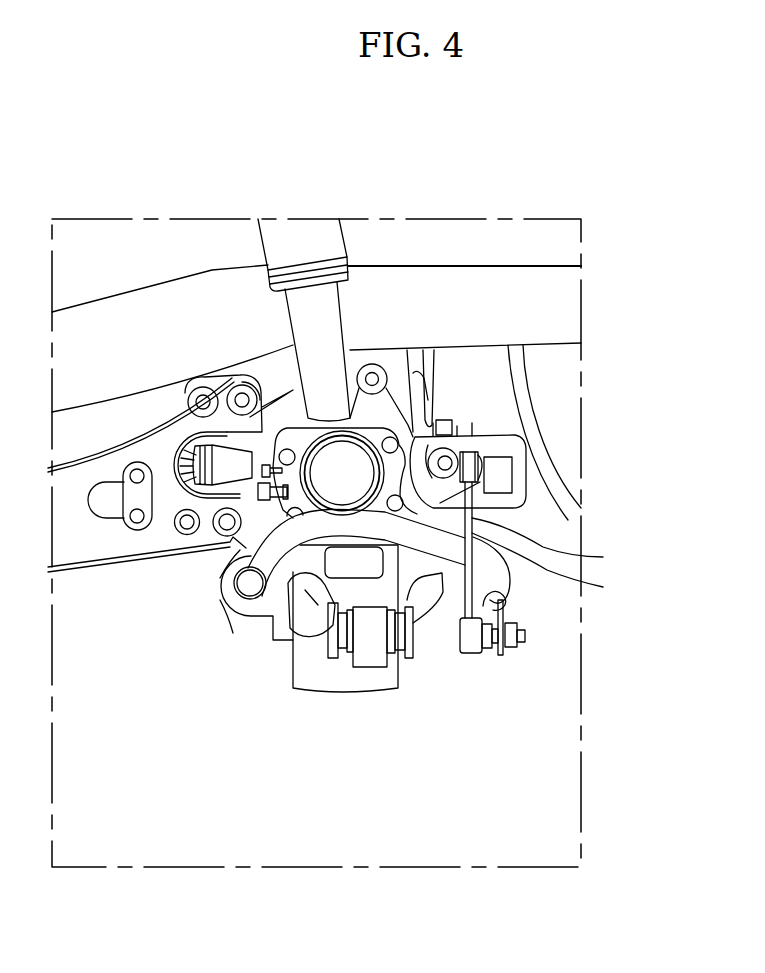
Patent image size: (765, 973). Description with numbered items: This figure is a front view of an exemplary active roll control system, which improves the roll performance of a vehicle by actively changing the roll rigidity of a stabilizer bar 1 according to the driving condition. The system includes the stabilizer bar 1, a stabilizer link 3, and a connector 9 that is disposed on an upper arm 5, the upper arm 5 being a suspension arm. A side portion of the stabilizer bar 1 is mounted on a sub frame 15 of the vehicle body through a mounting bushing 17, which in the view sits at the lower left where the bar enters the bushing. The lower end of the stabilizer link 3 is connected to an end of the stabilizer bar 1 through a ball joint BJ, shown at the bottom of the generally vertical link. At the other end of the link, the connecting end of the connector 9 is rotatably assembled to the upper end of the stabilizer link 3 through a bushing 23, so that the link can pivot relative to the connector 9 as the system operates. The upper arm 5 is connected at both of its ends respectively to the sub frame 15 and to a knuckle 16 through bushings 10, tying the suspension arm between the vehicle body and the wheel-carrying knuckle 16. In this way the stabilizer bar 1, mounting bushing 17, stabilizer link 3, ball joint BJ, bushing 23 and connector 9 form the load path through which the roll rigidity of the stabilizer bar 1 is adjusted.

The stabilizer bar 1 is at (253, 578).
The stabilizer link 3 is at (545, 546).
The upper arm 5 is at (520, 493).
The connector 9 is at (508, 468).
The bushings 10 is at (455, 421).
The sub frame 15 is at (285, 633).
The knuckle 16 is at (551, 569).
The mounting bushing 17 is at (240, 610).
The bushing 23 is at (483, 447).
The ball joint BJ is at (474, 648).